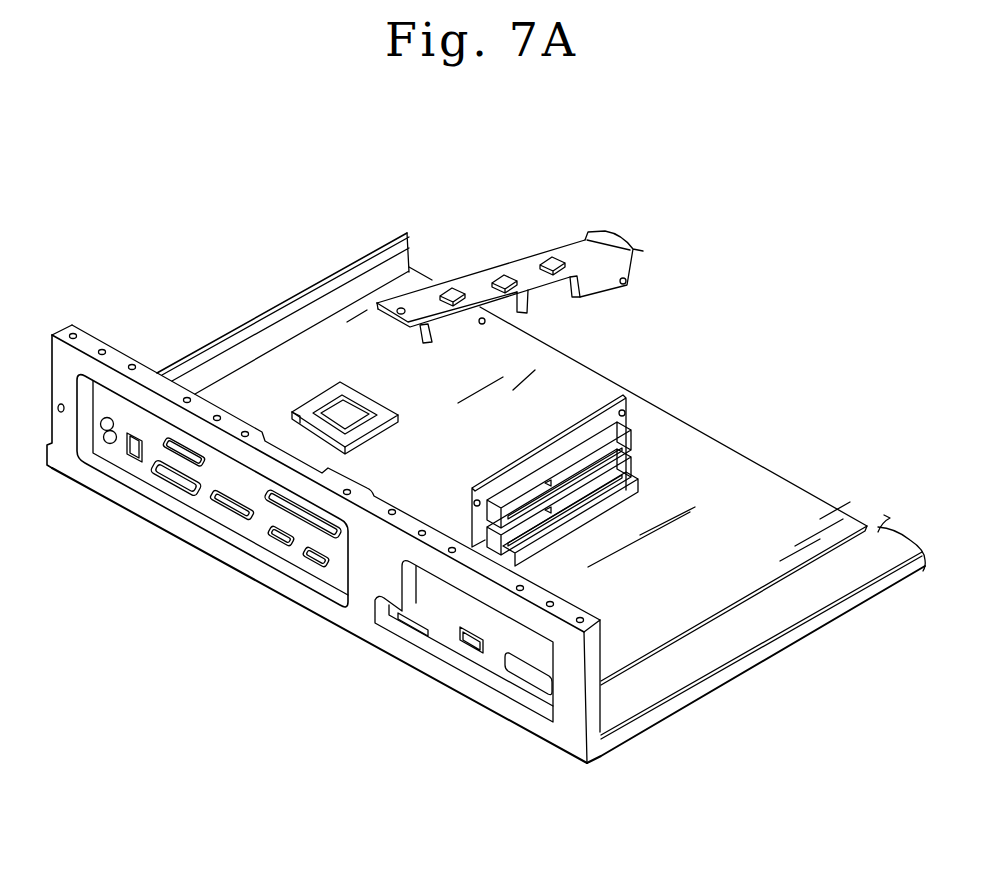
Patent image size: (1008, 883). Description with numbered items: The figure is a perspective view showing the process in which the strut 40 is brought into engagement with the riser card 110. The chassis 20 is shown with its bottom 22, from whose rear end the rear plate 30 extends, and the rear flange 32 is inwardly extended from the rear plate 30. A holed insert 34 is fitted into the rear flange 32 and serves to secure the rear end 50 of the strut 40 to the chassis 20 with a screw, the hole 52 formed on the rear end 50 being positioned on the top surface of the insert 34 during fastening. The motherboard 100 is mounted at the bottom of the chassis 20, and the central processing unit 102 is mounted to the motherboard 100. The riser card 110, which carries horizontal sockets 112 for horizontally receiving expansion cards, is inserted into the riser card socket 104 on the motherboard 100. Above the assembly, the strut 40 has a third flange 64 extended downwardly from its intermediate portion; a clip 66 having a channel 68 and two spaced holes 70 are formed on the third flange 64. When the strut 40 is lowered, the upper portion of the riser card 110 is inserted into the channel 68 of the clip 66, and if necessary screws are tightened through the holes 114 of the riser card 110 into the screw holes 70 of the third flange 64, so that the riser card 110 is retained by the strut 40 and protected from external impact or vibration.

The chassis 20 is at (522, 750).
The bottom 22 is at (657, 683).
The rear plate 30 is at (460, 685).
The rear flange 32 is at (468, 564).
The insert 34 is at (368, 507).
The strut 40 is at (566, 242).
The rear end 50 is at (416, 305).
The hole 52 is at (402, 307).
The third flange 64 is at (605, 284).
The clip 66 is at (576, 299).
The channel 68 is at (524, 308).
The holes 70 is at (626, 283).
The motherboard 100 is at (697, 600).
The central processing unit 102 is at (346, 410).
The riser card socket 104 is at (580, 523).
The riser card 110 is at (545, 453).
The horizontal sockets 112 is at (597, 440).
The holes 114 is at (477, 500).